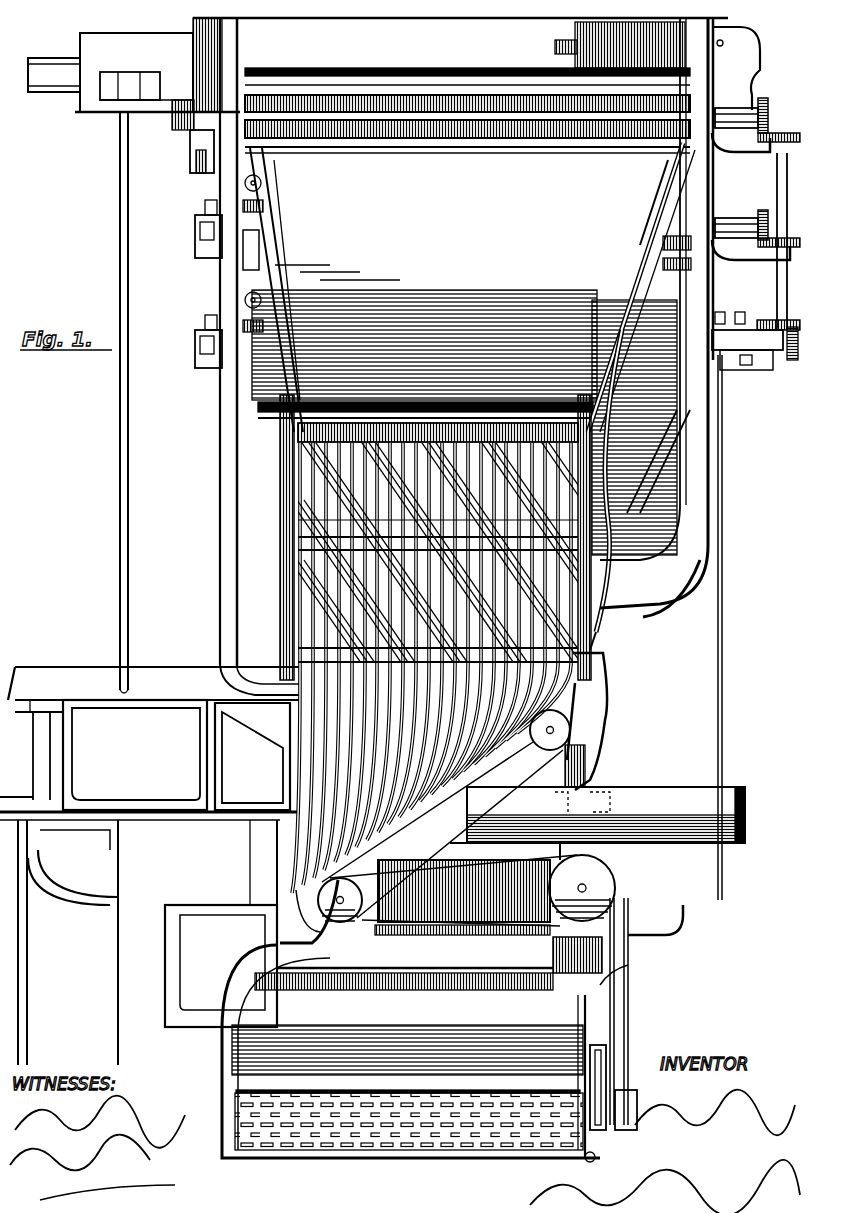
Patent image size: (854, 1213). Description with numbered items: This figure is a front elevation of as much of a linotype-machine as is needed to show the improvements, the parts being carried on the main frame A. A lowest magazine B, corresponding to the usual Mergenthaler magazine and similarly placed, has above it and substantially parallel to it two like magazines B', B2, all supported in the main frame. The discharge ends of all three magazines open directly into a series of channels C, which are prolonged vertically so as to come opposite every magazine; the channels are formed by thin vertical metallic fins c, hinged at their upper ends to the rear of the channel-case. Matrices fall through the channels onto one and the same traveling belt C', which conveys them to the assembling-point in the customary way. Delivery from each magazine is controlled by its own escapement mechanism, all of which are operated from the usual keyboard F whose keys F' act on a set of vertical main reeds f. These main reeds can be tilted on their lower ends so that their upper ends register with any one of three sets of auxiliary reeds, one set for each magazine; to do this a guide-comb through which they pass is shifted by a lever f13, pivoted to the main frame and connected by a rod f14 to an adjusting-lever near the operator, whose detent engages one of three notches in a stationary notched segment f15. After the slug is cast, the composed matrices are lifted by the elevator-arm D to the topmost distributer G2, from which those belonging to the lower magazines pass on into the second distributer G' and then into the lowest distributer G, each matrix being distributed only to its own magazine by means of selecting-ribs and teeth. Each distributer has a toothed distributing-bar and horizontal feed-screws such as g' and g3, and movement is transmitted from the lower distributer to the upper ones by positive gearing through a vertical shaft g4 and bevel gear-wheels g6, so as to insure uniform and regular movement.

The main frame A is at (218, 606).
The elevator-arm D is at (118, 450).
The distributer G is at (186, 341).
The distributer G' is at (185, 229).
The distributer G2 is at (192, 152).
The feed-screw g' is at (606, 260).
The feed-screw g3 is at (493, 142).
The vertical shaft g4 is at (792, 241).
The bevel gear-wheel g6 is at (788, 125).
The magazine B is at (654, 317).
The magazine B' is at (641, 387).
The magazine B2 is at (651, 215).
The fins c is at (310, 510).
The channels C is at (598, 592).
The traveling belt C' is at (594, 729).
The main reeds f is at (600, 982).
The lever f13 is at (620, 795).
The rod f14 is at (617, 1008).
The notched segment f15 is at (598, 1093).
The keyboard F is at (411, 1071).
The keys F' is at (408, 1144).